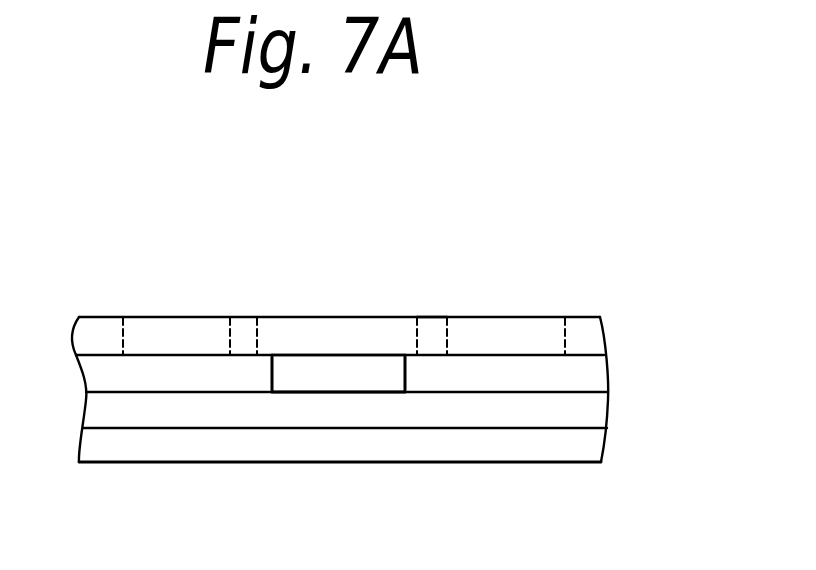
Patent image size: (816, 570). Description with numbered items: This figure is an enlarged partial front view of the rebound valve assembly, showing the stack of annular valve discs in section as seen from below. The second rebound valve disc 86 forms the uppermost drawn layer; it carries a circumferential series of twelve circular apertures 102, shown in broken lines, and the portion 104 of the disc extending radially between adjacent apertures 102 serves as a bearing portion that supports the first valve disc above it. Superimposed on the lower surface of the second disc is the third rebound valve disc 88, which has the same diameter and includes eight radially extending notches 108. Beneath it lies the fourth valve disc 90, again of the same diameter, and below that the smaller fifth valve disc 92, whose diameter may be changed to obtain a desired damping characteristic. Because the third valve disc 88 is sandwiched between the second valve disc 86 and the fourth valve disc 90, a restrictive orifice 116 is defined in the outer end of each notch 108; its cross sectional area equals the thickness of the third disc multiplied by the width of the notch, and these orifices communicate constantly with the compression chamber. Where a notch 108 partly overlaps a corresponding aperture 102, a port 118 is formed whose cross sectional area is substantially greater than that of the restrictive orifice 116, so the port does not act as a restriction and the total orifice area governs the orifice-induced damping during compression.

The second rebound valve disc 86 is at (583, 335).
The third rebound valve disc 88 is at (592, 373).
The fourth valve disc 90 is at (590, 413).
The fifth valve disc 92 is at (595, 447).
The circular apertures 102 is at (123, 331).
The bearing portion 104 is at (432, 317).
The notches 108 is at (274, 372).
The restrictive orifices 116 is at (362, 388).
The ports 118 is at (405, 367).